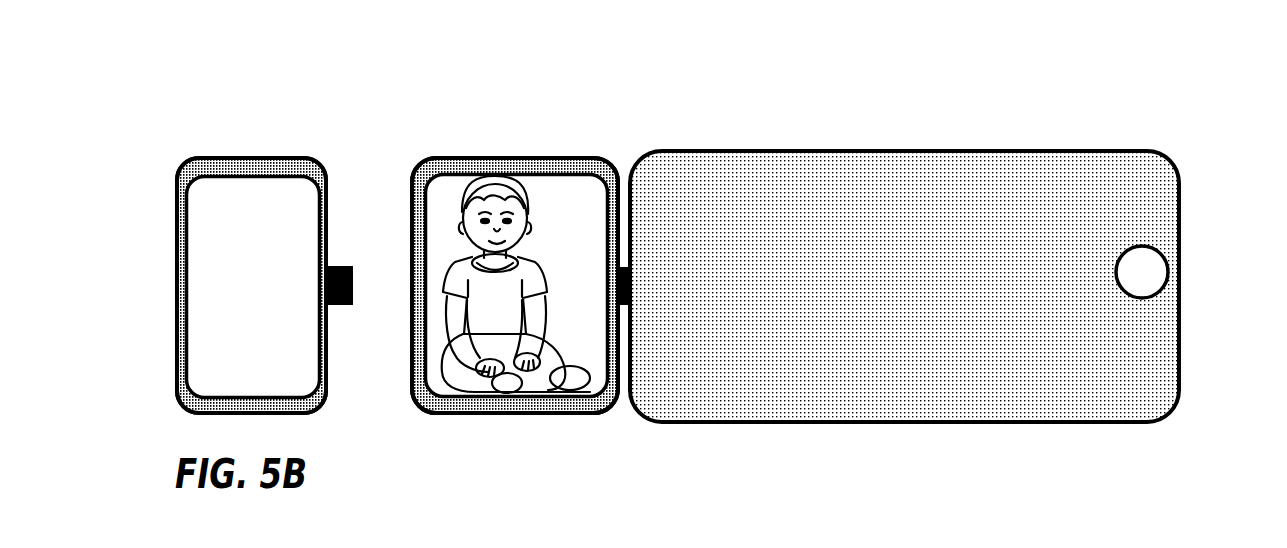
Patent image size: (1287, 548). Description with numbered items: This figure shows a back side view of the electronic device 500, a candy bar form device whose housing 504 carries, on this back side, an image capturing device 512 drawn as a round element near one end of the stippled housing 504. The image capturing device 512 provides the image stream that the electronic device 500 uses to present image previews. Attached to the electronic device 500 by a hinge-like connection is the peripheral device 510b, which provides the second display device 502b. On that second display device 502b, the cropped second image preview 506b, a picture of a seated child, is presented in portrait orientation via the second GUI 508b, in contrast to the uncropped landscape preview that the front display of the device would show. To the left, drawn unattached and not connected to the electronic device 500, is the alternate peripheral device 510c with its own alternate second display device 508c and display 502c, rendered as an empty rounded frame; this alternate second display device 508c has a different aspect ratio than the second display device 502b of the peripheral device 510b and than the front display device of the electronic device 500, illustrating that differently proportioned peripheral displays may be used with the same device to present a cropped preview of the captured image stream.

The electronic device 500 is at (928, 244).
The housing 504 is at (753, 148).
The image capturing device 512 is at (1150, 245).
The second display device 502b is at (521, 259).
The second GUI 508b is at (468, 155).
The peripheral device 510b is at (508, 155).
The cropped second image preview 506b is at (575, 322).
The alternate peripheral device display 502c is at (250, 224).
The alternate second display device 508c is at (183, 155).
The alternate peripheral device 510c is at (213, 155).